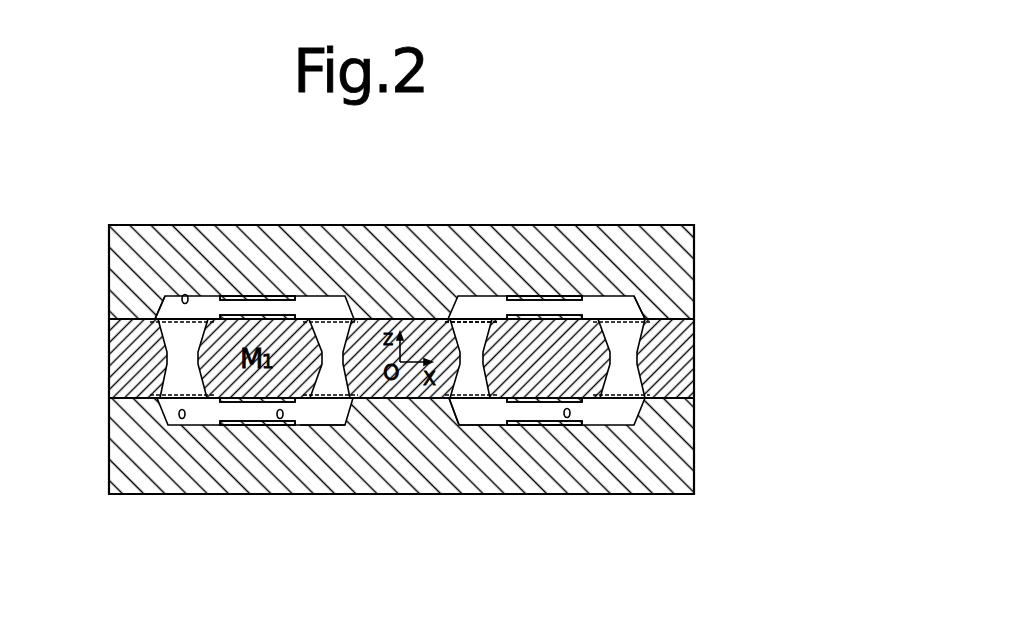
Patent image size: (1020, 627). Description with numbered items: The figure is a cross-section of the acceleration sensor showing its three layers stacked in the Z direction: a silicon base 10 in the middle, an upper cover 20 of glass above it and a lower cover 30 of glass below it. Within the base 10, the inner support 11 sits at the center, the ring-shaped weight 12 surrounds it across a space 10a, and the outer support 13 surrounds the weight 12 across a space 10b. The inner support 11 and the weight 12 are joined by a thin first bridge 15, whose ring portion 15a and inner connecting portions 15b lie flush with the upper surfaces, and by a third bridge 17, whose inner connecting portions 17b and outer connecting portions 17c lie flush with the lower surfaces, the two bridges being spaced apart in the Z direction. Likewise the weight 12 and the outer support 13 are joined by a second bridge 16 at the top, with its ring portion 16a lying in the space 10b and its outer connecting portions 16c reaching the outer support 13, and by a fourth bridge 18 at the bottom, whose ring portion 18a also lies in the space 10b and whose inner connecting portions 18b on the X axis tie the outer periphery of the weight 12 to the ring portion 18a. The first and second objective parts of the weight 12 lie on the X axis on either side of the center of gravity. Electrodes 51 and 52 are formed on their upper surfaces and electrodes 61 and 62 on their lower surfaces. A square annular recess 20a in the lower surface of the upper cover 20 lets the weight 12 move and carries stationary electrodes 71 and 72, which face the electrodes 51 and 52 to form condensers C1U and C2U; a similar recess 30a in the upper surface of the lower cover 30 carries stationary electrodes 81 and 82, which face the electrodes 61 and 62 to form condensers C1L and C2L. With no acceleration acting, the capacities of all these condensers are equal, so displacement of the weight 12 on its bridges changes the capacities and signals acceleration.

The base 10 is at (696, 334).
The space 10a is at (330, 348).
The space 10b is at (178, 338).
The inner support 11 is at (401, 383).
The weight 12 is at (587, 378).
The outer support 13 is at (697, 366).
The first bridge 15 is at (468, 314).
The ring portion 15a is at (480, 318).
The inner connecting portions 15b is at (350, 318).
The second bridge 16 is at (640, 313).
The ring portion 16a is at (627, 314).
The outer connecting portions 16c is at (162, 297).
The third bridge 17 is at (477, 404).
The inner connecting portions 17b is at (448, 426).
The outer connecting portions 17c is at (333, 425).
The fourth bridge 18 is at (615, 404).
The ring portion 18a is at (690, 462).
The inner connecting portions 18b is at (194, 426).
The upper cover 20 is at (696, 268).
The recess 20a is at (183, 294).
The lower cover 30 is at (696, 455).
The recess 30a is at (180, 420).
The electrode 51 is at (238, 315).
The electrode 52 is at (547, 314).
The electrode 61 is at (257, 404).
The electrode 62 is at (548, 404).
The stationary electrode 71 is at (283, 300).
The stationary electrode 72 is at (520, 297).
The stationary electrode 81 is at (283, 424).
The stationary electrode 82 is at (574, 424).
The condenser C1U is at (258, 308).
The condenser C1L is at (240, 412).
The condenser C2U is at (570, 308).
The condenser C2L is at (522, 412).